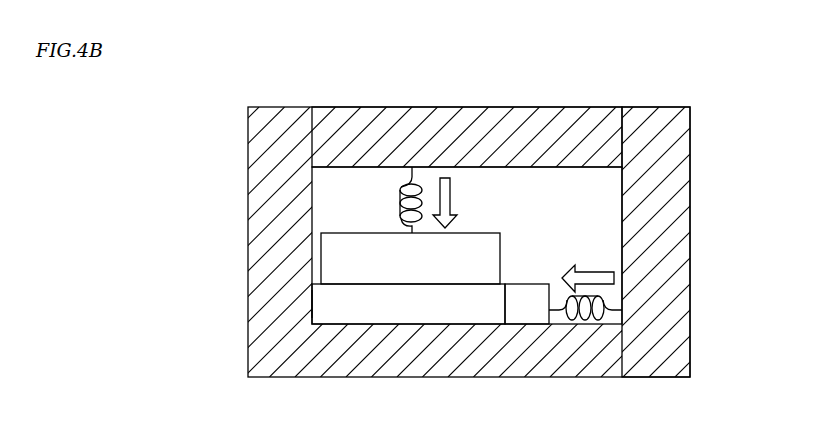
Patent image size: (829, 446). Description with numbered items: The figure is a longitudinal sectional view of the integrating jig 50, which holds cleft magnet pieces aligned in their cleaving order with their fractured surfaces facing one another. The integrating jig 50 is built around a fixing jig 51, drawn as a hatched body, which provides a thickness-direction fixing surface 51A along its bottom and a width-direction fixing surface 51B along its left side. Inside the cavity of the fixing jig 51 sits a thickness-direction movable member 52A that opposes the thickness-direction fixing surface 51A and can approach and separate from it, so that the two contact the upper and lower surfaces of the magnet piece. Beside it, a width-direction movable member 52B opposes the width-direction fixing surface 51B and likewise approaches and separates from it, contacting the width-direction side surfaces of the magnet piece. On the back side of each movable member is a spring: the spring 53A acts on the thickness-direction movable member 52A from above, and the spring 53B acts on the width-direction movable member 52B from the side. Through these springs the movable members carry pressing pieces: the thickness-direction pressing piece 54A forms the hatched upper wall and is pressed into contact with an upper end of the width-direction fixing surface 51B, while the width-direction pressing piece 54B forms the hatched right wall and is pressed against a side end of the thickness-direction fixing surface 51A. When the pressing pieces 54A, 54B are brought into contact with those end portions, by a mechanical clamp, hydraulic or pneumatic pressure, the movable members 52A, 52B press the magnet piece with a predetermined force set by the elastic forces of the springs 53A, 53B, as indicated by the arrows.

The integrating jig 50 is at (414, 229).
The fixing jig 51 is at (285, 343).
The thickness-direction fixing surface 51A is at (362, 314).
The width-direction fixing surface 51B is at (316, 308).
The thickness-direction movable member 52A is at (477, 241).
The width-direction movable member 52B is at (523, 308).
The spring 53A is at (396, 195).
The spring 53B is at (583, 318).
The thickness-direction pressing piece 54A is at (357, 128).
The width-direction pressing piece 54B is at (657, 355).